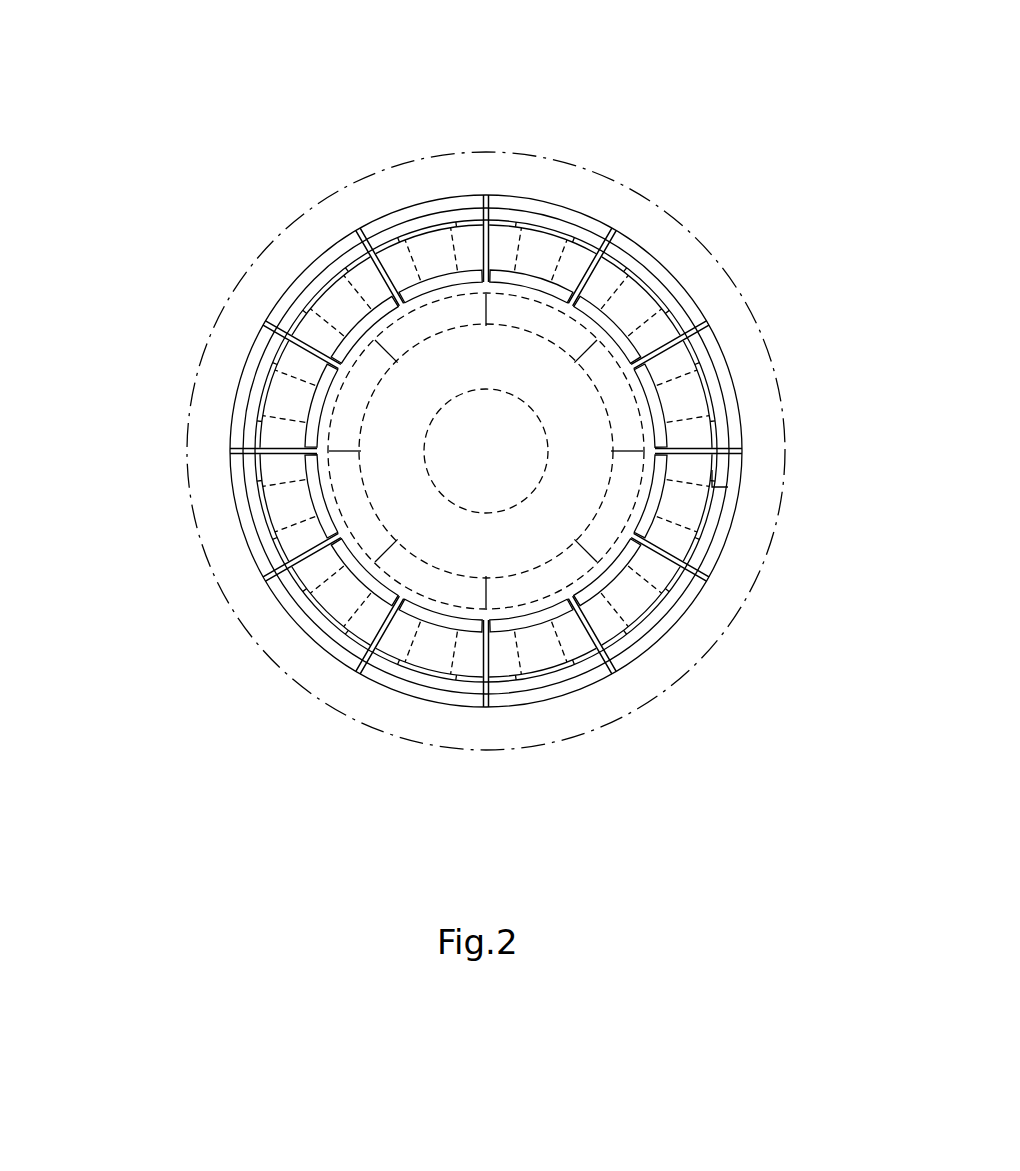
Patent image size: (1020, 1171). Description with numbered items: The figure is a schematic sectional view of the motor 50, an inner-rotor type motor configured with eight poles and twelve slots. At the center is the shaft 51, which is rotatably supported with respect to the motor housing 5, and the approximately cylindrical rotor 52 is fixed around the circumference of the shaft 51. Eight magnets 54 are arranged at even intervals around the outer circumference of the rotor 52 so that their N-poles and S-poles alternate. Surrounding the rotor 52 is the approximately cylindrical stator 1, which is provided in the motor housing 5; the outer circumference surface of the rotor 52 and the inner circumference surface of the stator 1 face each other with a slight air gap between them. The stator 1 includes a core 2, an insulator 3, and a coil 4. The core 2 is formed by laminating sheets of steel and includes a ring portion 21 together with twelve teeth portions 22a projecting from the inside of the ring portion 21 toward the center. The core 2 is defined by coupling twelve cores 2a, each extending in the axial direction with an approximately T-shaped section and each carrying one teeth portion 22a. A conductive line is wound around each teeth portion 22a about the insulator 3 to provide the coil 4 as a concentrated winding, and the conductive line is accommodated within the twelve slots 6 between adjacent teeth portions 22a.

The motor 50 is at (643, 72).
The stator 1 is at (600, 680).
The core 2 is at (300, 627).
The core 2a is at (318, 255).
The insulator 3 is at (714, 469).
The coil 4 is at (657, 330).
The motor housing 5 is at (328, 707).
The slot 6 is at (684, 548).
The ring portion 21 is at (680, 628).
The teeth portion 22a is at (293, 377).
The shaft 51 is at (488, 388).
The rotor 52 is at (660, 395).
The magnet 54 is at (362, 388).